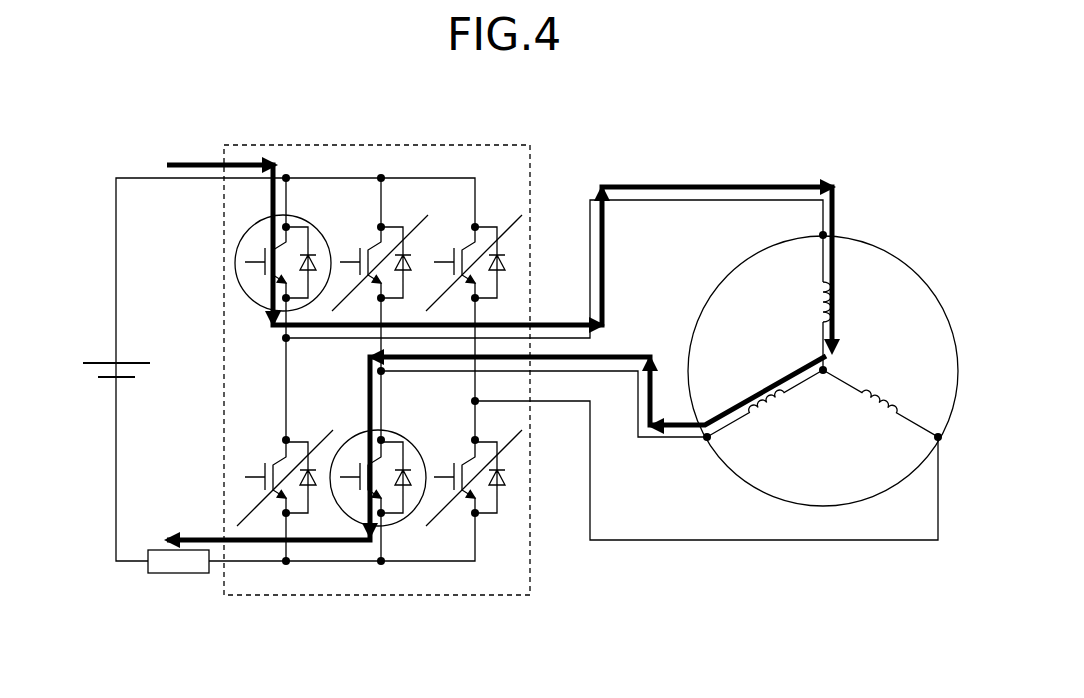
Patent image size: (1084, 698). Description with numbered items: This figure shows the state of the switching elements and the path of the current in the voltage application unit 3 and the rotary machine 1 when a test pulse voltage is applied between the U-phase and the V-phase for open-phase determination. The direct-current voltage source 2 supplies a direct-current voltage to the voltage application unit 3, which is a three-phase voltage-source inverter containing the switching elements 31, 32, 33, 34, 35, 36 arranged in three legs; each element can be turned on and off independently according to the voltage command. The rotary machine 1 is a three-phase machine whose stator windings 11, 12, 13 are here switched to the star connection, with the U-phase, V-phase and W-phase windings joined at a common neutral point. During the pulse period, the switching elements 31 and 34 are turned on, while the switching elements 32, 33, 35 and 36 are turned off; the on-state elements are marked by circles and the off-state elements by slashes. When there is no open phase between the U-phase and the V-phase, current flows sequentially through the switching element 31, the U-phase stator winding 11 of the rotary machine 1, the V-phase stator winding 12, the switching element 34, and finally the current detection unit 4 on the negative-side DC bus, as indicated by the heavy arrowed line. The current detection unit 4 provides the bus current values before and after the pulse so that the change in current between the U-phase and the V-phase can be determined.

The rotary machine 1 is at (904, 263).
The direct-current voltage source 2 is at (85, 373).
The voltage application unit 3 is at (508, 145).
The current detection unit 4 is at (160, 550).
The stator winding 11 is at (820, 306).
The stator winding 12 is at (755, 385).
The stator winding 13 is at (884, 388).
The switching element 31 is at (263, 240).
The switching element 32 is at (272, 500).
The switching element 33 is at (357, 242).
The switching element 34 is at (358, 503).
The switching element 35 is at (451, 242).
The switching element 36 is at (460, 500).